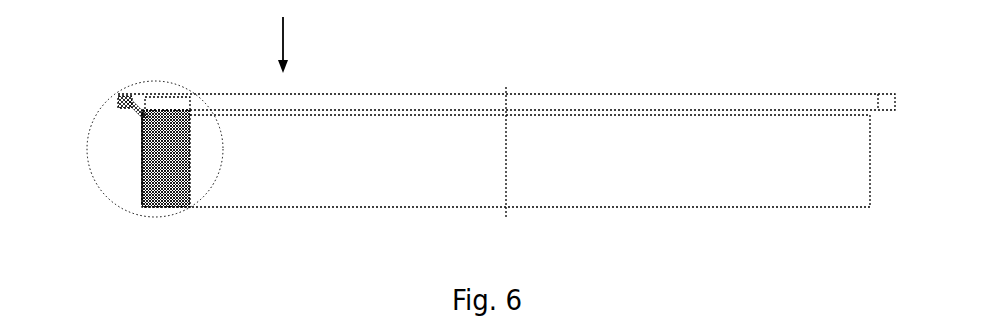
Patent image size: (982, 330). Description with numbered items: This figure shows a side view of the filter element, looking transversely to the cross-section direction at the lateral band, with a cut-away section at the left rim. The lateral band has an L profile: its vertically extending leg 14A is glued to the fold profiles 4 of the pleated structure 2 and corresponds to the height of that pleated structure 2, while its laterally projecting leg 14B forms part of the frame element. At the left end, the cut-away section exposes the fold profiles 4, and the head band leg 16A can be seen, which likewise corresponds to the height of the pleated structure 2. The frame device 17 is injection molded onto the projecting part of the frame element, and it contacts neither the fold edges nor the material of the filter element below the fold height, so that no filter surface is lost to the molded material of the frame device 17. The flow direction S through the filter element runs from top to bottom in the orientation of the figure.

The pleated structure 2 is at (103, 105).
The fold profiles 4 is at (167, 190).
The leg of lateral band 14A is at (300, 190).
The laterally projecting leg of lateral band 14B is at (163, 105).
The head band leg 16A is at (142, 168).
The frame device 17 is at (123, 98).
The flow direction S is at (283, 42).